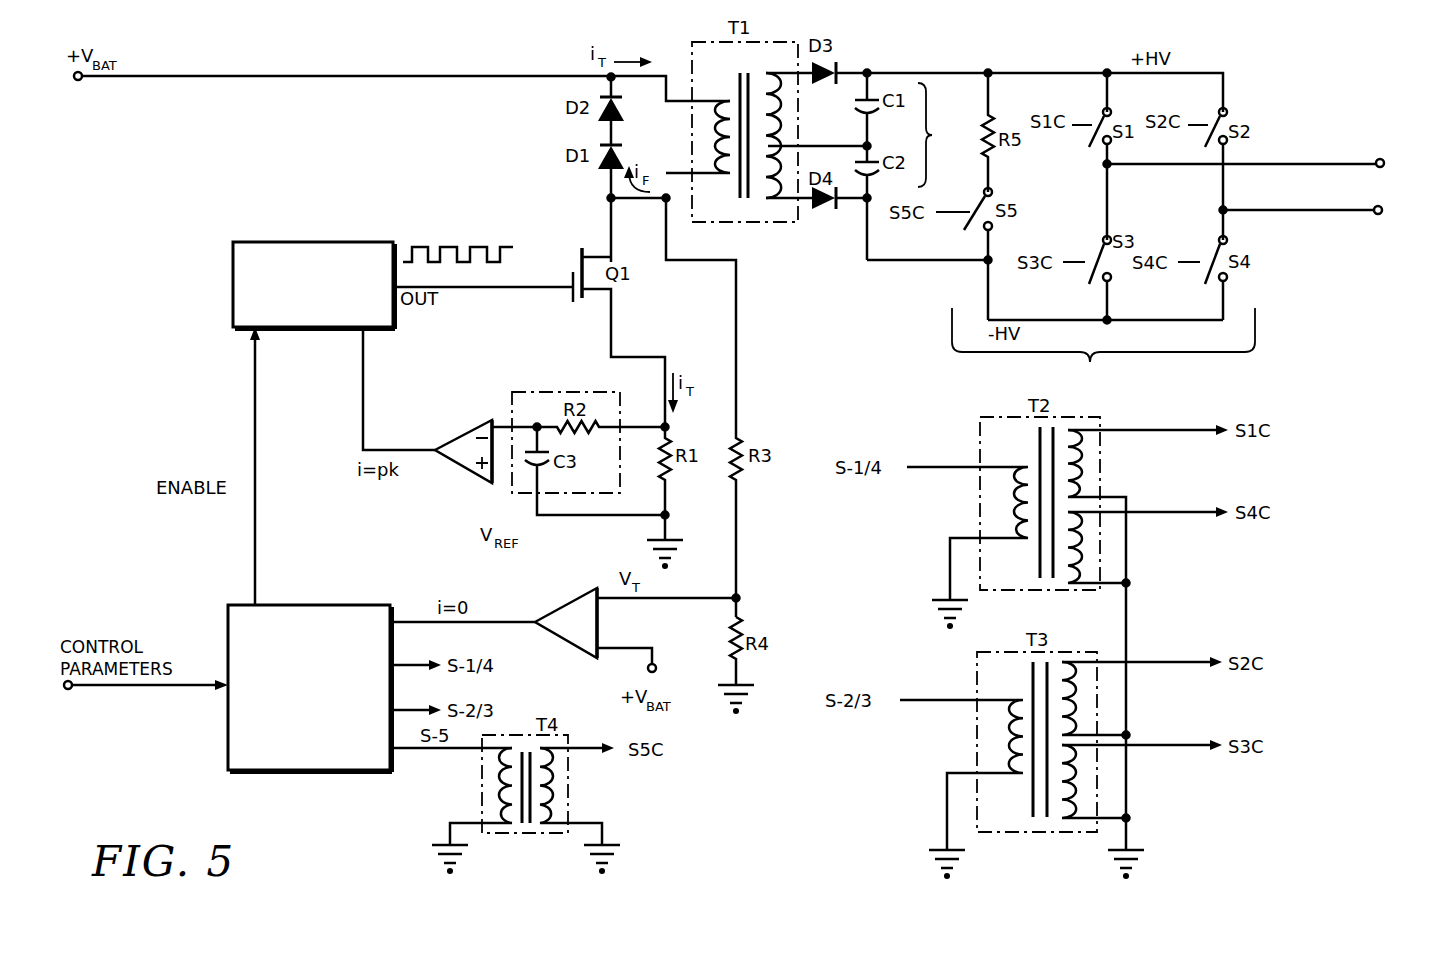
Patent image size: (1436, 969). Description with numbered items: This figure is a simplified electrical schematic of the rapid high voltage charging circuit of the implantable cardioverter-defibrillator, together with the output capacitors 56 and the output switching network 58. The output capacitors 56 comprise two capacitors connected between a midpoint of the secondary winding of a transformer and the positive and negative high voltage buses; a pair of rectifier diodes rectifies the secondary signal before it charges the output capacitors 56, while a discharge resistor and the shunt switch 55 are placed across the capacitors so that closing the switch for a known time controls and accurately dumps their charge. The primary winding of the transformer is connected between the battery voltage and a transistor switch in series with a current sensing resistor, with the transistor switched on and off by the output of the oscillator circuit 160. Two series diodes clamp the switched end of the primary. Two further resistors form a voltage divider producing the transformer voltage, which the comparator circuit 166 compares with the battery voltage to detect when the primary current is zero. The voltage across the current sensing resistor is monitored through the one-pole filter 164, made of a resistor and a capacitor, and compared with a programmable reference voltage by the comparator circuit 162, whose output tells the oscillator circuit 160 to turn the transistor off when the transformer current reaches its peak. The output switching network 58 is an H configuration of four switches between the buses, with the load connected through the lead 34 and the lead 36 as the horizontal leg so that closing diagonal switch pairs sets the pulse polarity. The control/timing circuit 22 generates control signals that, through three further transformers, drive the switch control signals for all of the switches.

The control/timing circuit 22 is at (373, 605).
The lead 34 is at (1384, 158).
The lead 36 is at (1382, 205).
The switch S5 55 is at (975, 206).
The output capacitors 56 is at (944, 124).
The output switching network 58 is at (1090, 362).
The oscillator circuit 160 is at (342, 241).
The comparator circuit 162 is at (455, 434).
The one-pole filter 164 is at (566, 392).
The comparator circuit 166 is at (567, 603).